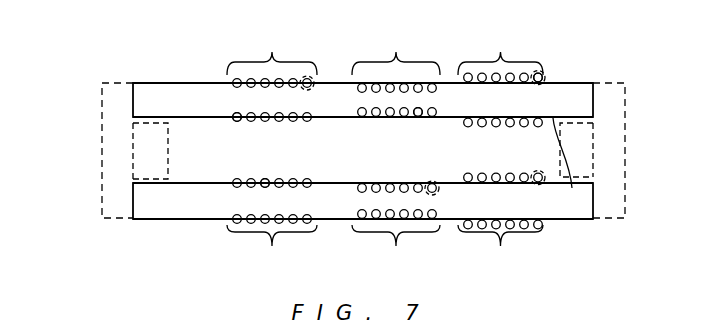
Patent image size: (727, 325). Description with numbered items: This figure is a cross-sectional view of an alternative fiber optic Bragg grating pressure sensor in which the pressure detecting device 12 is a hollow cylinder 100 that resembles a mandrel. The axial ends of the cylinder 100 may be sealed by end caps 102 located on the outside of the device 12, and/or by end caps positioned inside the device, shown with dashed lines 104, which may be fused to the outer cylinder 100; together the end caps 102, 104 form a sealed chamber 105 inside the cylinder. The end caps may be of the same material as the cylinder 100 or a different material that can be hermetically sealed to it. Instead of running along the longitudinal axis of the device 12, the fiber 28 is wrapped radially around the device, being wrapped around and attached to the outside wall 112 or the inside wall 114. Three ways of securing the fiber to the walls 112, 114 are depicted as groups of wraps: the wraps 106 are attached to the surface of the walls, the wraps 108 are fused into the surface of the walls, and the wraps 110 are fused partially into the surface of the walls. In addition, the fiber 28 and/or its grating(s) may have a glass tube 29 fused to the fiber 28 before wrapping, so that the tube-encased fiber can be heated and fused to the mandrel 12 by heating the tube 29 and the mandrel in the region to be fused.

The hollow cylinder 100 is at (145, 93).
The pressure detecting device 12 is at (174, 81).
The outside wall 112 is at (190, 82).
The end caps 102 is at (112, 122).
The inside end caps 104 is at (132, 155).
The wraps fused partially into the wall surface 110 is at (272, 152).
The wraps fused into the wall surface 108 is at (396, 152).
The wraps attached to the wall surface 106 is at (500, 152).
The fiber 28 is at (238, 122).
The glass tube 29 is at (311, 76).
The sealed chamber 105 is at (337, 165).
The inside wall 114 is at (546, 178).